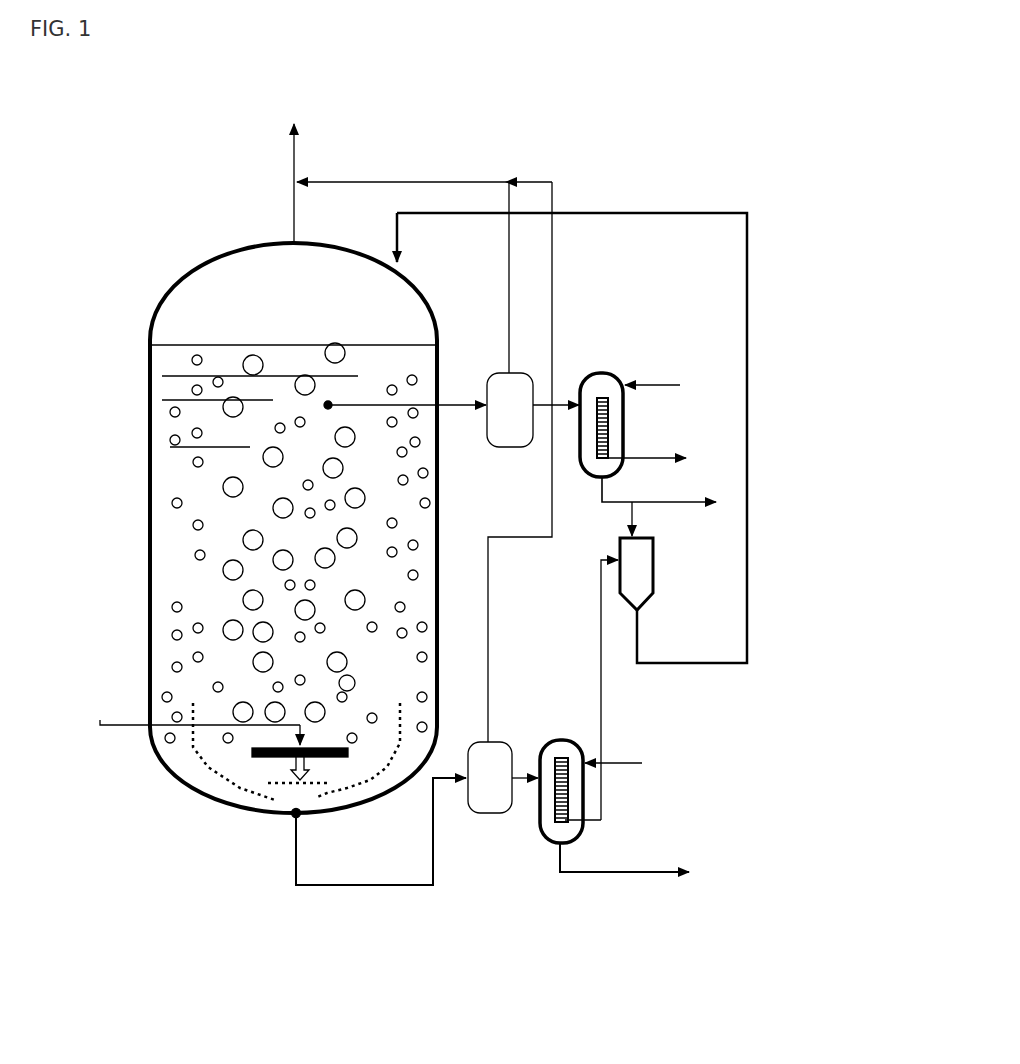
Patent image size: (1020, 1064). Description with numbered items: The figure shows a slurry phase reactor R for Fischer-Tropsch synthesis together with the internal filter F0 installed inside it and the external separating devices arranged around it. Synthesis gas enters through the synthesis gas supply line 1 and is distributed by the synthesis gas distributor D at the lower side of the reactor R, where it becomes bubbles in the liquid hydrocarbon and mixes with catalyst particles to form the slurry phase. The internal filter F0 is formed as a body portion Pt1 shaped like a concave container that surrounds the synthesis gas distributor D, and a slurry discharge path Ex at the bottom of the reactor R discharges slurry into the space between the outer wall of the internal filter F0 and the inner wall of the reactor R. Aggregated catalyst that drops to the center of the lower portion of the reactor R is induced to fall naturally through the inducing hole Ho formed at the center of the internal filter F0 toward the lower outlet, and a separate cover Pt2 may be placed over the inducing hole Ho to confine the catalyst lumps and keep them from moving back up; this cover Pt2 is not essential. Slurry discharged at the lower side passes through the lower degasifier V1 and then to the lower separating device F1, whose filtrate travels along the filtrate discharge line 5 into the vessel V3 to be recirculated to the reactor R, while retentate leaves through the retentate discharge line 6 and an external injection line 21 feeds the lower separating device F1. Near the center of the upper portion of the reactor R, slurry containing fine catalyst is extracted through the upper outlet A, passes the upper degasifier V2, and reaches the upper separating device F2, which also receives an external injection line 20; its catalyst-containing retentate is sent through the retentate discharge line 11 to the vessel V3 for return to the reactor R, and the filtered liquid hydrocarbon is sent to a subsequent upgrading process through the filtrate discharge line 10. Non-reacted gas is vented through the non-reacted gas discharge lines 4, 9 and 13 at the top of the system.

The slurry phase reactor R is at (234, 528).
The upper outlet A is at (327, 402).
The synthesis gas supply line 1 is at (173, 698).
The non-reacted gas discharge line 4 is at (532, 462).
The filtrate discharge line 5 is at (658, 690).
The retentate discharge line 6 is at (624, 925).
The non-reacted gas discharge line 9 is at (424, 114).
The filtrate discharge line 10 is at (668, 407).
The retentate discharge line 11 is at (572, 438).
The non-reacted gas discharge line 13 is at (236, 183).
The external injection line 20 is at (672, 323).
The external injection line 21 is at (674, 810).
The lower degasifier V1 is at (481, 853).
The upper degasifier V2 is at (509, 346).
The vessel V3 is at (729, 543).
The lower separating device F1 is at (532, 863).
The upper separating device F2 is at (615, 364).
The internal filter F0 is at (119, 655).
The slurry discharge path Ex is at (284, 721).
The synthesis gas distributor D is at (242, 829).
The inducing hole Ho is at (317, 857).
The body portion Pt1 is at (128, 830).
The cover Pt2 is at (300, 778).